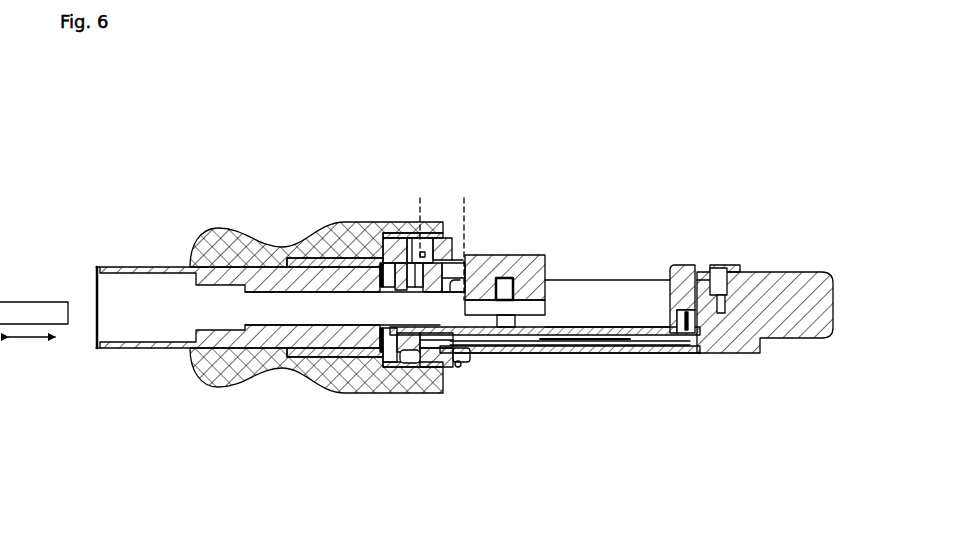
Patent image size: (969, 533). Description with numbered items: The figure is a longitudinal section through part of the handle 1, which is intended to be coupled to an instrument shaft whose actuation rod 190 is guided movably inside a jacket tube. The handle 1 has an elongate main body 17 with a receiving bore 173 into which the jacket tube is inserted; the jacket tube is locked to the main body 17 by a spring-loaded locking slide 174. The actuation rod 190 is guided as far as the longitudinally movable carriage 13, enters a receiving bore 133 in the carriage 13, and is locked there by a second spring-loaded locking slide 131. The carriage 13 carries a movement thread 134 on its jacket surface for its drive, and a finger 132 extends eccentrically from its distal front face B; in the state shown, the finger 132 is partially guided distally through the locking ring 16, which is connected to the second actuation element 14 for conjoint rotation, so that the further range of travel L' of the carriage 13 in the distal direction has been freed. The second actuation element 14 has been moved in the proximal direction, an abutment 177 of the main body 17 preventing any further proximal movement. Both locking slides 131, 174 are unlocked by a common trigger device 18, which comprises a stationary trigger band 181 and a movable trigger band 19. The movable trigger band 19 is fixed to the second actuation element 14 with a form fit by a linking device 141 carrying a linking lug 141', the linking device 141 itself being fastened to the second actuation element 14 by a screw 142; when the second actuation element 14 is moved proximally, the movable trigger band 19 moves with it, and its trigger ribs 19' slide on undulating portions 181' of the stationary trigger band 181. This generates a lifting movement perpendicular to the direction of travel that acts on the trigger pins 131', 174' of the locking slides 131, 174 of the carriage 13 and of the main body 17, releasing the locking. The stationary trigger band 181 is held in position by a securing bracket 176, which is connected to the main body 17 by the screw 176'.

The handle 1 is at (647, 208).
The carriage 13 is at (525, 273).
The spring-loaded locking slide 131 is at (536, 222).
The trigger pin 131' is at (524, 384).
The finger 132 is at (450, 368).
The receiving bore 133 is at (465, 288).
The movement thread 134 is at (485, 305).
The second actuation element 14 is at (212, 224).
The linking device 141 is at (375, 417).
The linking lug 141' is at (406, 408).
The screw 142 is at (415, 364).
The locking ring 16 is at (392, 252).
The main body 17 is at (794, 268).
The receiving bore 173 is at (125, 293).
The spring-loaded locking slide 174 is at (360, 189).
The trigger pin 174' is at (363, 400).
The securing bracket 176 is at (702, 272).
The screw 176' is at (750, 233).
The abutment 177 is at (392, 256).
The trigger device 18 is at (540, 358).
The stationary trigger band 181 is at (577, 389).
The undulating portions 181' is at (585, 293).
The movable trigger band 19 is at (570, 378).
The trigger ribs 19' is at (570, 383).
The actuation rod 190 is at (32, 300).
The front face B is at (460, 366).
The range of travel L' is at (442, 215).